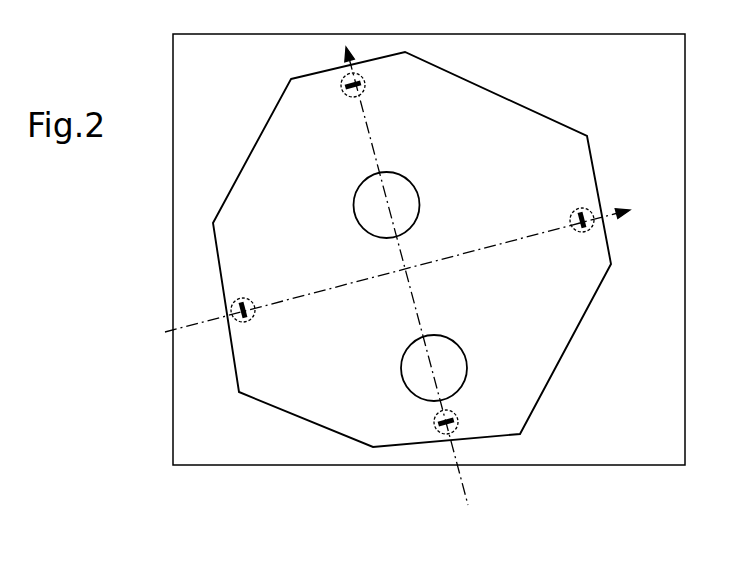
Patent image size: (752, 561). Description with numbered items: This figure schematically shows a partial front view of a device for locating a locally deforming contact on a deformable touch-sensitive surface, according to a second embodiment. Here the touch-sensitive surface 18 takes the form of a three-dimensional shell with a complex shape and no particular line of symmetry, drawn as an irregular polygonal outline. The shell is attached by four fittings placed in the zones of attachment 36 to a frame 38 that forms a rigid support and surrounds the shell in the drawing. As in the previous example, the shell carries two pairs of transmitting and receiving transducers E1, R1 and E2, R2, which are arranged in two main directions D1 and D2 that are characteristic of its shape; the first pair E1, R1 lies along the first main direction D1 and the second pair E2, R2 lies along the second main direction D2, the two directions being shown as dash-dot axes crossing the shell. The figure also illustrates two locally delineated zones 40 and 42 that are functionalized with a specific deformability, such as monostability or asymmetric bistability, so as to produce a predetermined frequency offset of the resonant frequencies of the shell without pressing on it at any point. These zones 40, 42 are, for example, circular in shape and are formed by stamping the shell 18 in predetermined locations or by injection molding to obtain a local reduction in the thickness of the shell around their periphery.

The touch-sensitive surface 18 is at (270, 393).
The zones of attachment 36 is at (412, 240).
The frame 38 is at (623, 450).
The locally delineated functionalized zone 40 is at (352, 199).
The locally delineated functionalized zone 42 is at (462, 352).
The transmitting transducer E1 is at (366, 83).
The transmitting transducer E2 is at (245, 297).
The receiving transducer R1 is at (433, 422).
The receiving transducer R2 is at (587, 232).
The first main direction D1 is at (366, 120).
The second main direction D2 is at (472, 252).